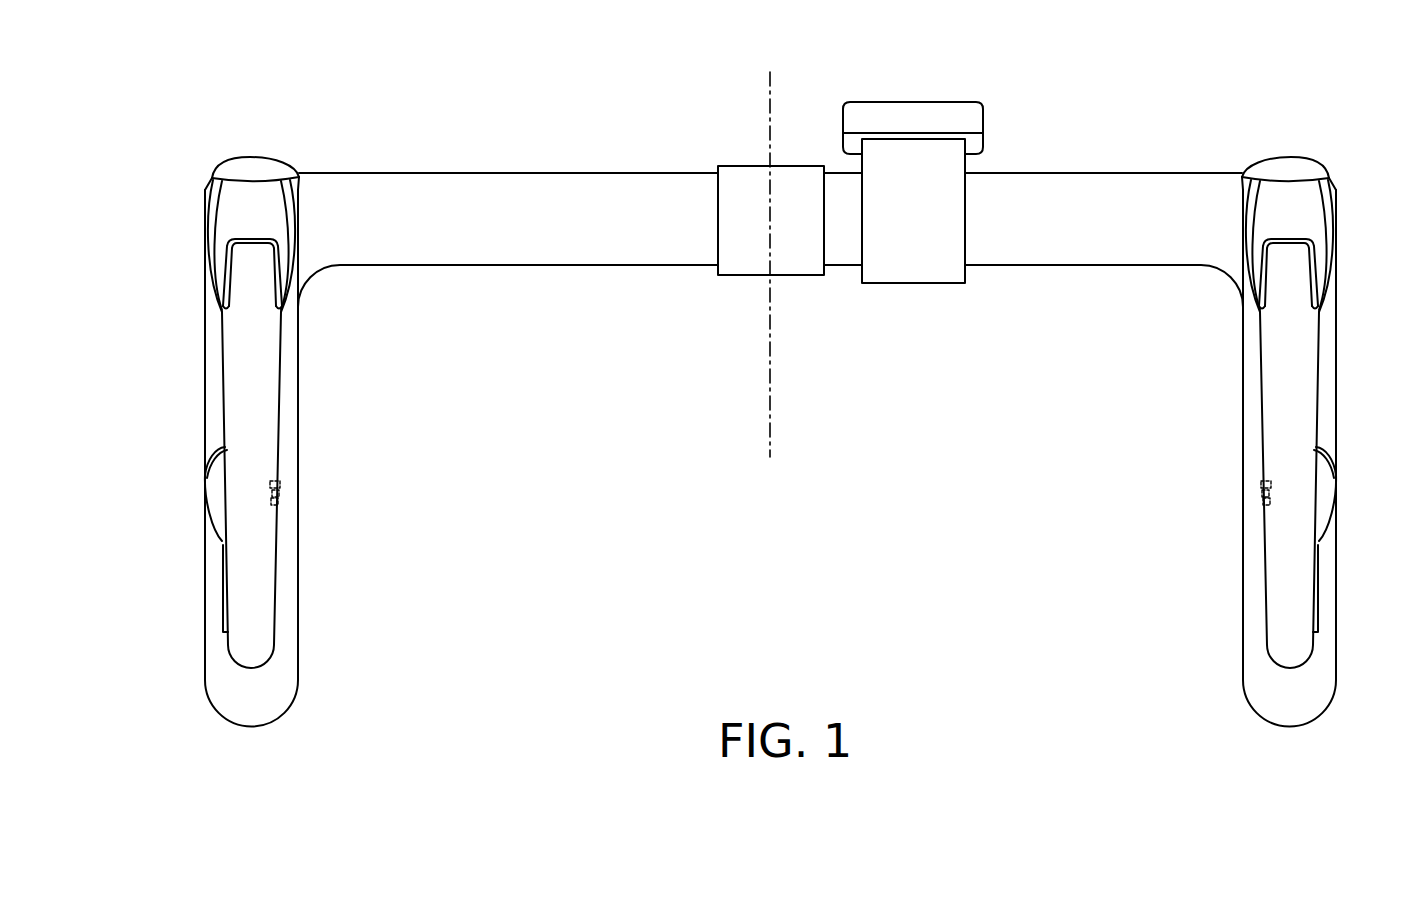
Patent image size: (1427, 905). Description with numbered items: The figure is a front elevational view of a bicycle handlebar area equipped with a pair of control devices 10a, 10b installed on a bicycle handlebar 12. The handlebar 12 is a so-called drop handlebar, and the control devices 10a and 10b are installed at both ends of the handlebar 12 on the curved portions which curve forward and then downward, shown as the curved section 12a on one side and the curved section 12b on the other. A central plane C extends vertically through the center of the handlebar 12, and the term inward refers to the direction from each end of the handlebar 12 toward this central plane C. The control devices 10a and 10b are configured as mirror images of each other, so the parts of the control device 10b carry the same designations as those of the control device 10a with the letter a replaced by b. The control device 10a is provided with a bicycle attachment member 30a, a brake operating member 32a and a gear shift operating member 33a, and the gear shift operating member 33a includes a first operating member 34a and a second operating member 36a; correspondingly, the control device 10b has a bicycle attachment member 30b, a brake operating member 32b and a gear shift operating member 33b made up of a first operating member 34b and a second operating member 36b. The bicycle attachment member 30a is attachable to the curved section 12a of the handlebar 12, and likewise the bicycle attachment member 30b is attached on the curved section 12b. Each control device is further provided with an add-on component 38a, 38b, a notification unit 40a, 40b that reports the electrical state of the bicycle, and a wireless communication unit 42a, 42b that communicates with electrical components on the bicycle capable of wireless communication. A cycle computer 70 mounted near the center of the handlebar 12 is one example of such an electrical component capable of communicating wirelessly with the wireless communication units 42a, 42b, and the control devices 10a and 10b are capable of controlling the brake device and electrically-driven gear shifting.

The bicycle handlebar 12 is at (542, 157).
The curved section of the handlebar 12a is at (298, 422).
The curved section of the handlebar 12b is at (1243, 422).
The control device 10a is at (339, 390).
The control device 10b is at (1232, 390).
The bicycle attachment member 30a is at (216, 157).
The bicycle attachment member 30b is at (1326, 157).
The brake operating member 32a is at (275, 340).
The brake operating member 32b is at (1288, 274).
The gear shift operating member 33a is at (343, 552).
The gear shift operating member 33b is at (1196, 552).
The first operating member 34a is at (225, 612).
The first operating member 34b is at (1316, 612).
The second operating member 36a is at (218, 517).
The second operating member 36b is at (1323, 517).
The add-on component 38a is at (276, 505).
The add-on component 38b is at (1265, 505).
The notification unit 40a is at (278, 492).
The notification unit 40b is at (1263, 492).
The wireless communication unit 42a is at (276, 483).
The wireless communication unit 42b is at (1265, 483).
The cycle computer 70 is at (935, 112).
The central plane C is at (772, 395).